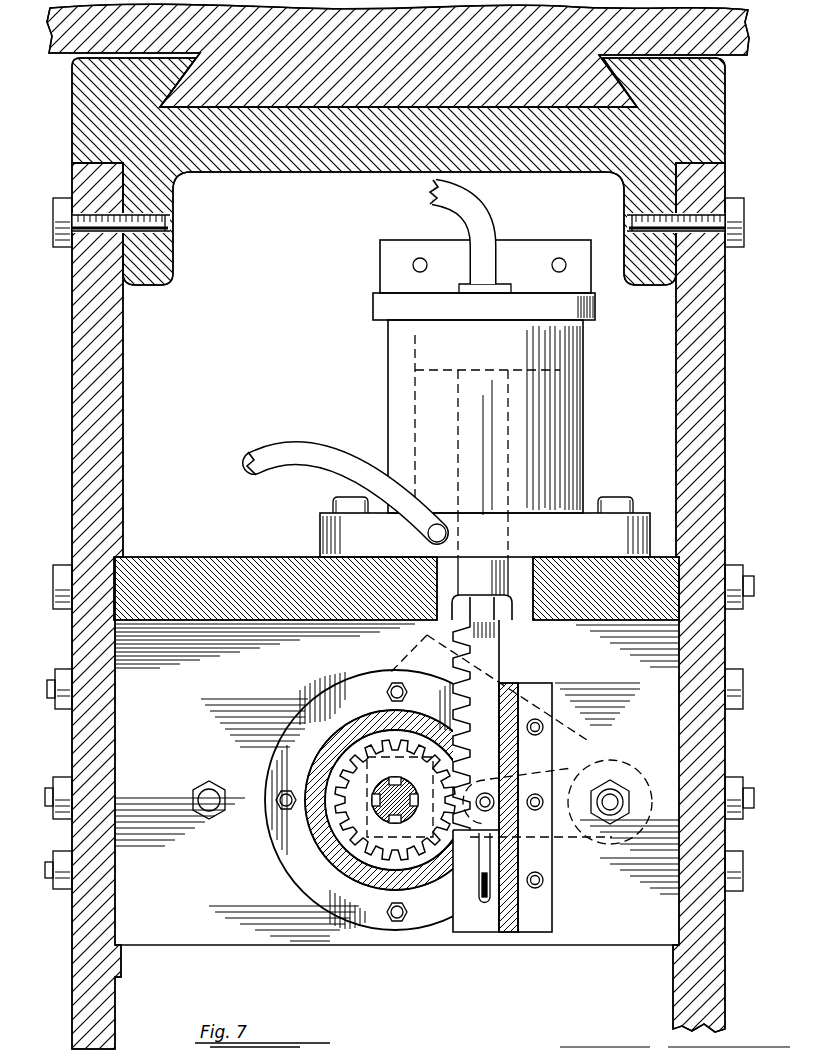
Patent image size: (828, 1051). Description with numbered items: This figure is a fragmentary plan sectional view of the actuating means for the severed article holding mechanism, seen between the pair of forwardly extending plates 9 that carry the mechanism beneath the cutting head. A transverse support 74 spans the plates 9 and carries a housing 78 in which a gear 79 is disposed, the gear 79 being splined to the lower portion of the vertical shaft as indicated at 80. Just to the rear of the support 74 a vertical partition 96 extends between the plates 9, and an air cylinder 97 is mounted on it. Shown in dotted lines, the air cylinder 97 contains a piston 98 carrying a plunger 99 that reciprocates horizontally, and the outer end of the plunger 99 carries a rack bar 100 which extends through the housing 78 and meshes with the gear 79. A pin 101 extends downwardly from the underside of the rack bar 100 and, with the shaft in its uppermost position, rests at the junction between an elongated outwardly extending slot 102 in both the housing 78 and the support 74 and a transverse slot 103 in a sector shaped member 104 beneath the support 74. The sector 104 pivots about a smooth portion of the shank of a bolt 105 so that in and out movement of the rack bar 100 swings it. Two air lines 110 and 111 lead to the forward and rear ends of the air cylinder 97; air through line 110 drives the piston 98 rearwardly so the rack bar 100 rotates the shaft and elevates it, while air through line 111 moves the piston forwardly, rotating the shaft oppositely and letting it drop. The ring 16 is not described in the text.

The forwardly extending plates 9 is at (108, 388).
The gear 16 is at (372, 814).
The transverse support 74 is at (185, 944).
The housing 78 is at (373, 730).
The gear 79 is at (355, 815).
The spline 80 is at (386, 790).
The vertical partition 96 is at (208, 566).
The air cylinder 97 is at (388, 396).
The piston 98 is at (445, 343).
The plunger 99 is at (487, 577).
The rack bar 100 is at (492, 660).
The pin 101 is at (490, 800).
The elongated outwardly extending slot 102 is at (483, 887).
The transverse slot 103 is at (512, 770).
The sector shaped member 104 is at (596, 742).
The bolt 105 is at (618, 795).
The air line 110 is at (320, 423).
The air line 111 is at (434, 204).